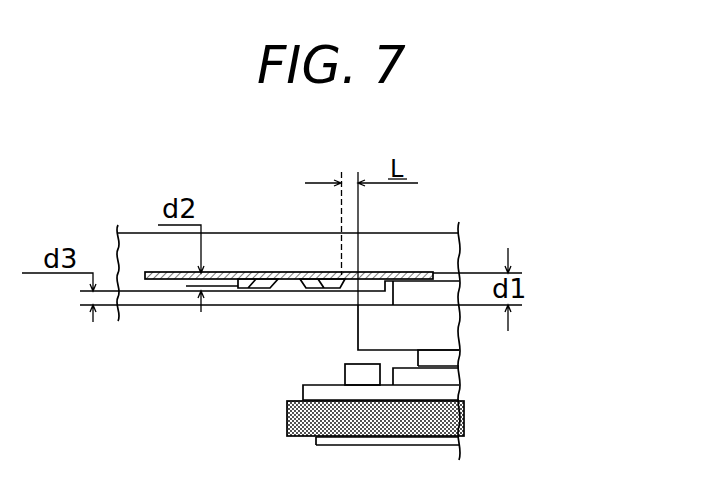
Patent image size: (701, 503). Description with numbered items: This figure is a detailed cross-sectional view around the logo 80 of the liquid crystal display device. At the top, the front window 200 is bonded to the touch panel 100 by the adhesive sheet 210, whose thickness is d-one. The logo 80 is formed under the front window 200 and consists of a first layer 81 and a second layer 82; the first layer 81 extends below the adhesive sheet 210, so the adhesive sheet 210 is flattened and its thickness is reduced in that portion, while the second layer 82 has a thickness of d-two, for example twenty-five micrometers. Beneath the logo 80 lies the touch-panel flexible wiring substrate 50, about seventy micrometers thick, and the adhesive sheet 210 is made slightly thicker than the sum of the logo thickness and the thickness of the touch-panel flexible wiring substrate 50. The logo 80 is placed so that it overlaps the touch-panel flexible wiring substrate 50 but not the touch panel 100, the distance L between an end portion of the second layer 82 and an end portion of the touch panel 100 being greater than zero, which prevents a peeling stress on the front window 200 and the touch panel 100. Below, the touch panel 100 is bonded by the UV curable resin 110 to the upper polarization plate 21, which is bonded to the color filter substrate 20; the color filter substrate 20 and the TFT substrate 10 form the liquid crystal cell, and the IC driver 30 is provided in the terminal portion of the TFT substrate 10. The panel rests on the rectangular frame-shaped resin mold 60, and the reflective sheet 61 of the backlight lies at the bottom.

The front window 200 is at (435, 242).
The adhesive sheet 210 is at (436, 284).
The logo 80 is at (300, 183).
The first layer 81 is at (234, 279).
The second layer 82 is at (292, 279).
The touch-panel flexible wiring substrate 50 is at (165, 298).
The touch panel 100 is at (430, 331).
The UV curable resin 110 is at (447, 354).
The upper polarization plate 21 is at (448, 367).
The IC driver 30 is at (345, 367).
The color filter substrate 20 is at (450, 378).
The TFT substrate 10 is at (450, 394).
The resin mold 60 is at (450, 428).
The reflective sheet 61 is at (455, 447).